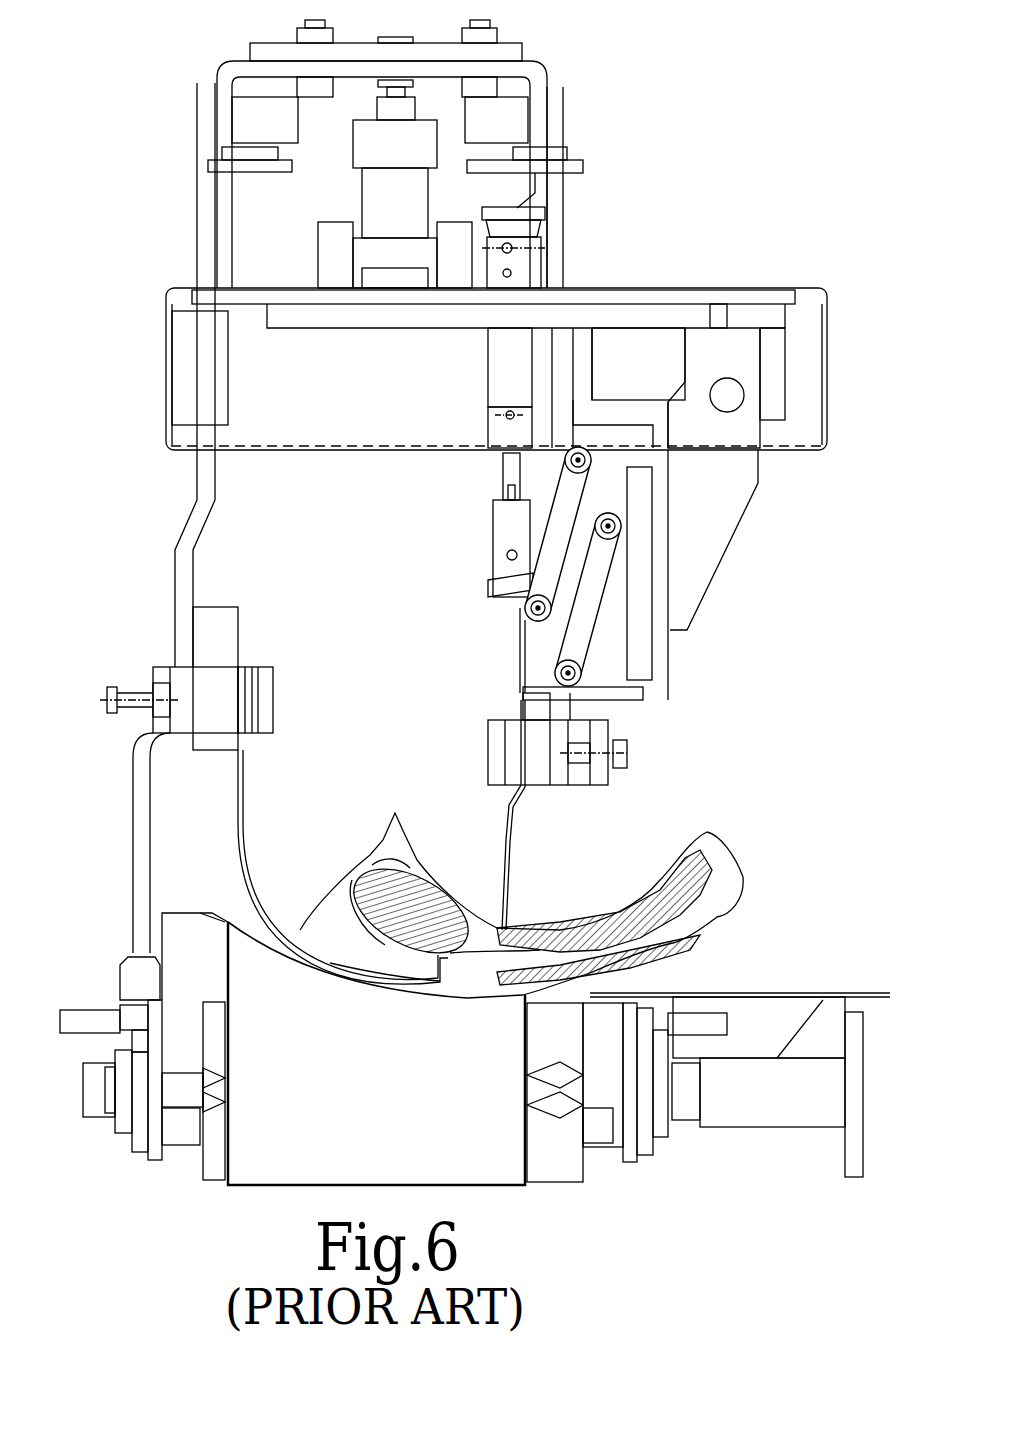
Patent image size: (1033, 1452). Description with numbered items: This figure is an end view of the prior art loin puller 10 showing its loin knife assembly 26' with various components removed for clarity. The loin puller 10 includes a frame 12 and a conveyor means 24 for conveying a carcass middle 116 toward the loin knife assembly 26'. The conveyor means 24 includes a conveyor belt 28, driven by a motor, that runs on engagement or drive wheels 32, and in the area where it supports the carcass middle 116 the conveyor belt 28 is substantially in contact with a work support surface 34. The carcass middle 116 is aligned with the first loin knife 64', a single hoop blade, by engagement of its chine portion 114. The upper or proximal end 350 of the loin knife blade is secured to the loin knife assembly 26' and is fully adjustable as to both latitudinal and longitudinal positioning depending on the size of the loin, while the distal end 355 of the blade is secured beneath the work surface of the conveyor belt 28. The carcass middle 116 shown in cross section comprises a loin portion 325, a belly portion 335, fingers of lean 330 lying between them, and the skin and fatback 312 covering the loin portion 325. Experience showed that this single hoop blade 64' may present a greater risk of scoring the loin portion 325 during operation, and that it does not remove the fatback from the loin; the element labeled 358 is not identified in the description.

The loin puller 10 is at (122, 233).
The frame 12 is at (572, 226).
The conveyor means 24 is at (160, 1190).
The loin knife assembly 26' is at (606, 748).
The conveyor belt 28 is at (240, 990).
The drive wheels 32 is at (565, 1170).
The work support surface 34 is at (140, 920).
The loin knife 64' is at (557, 815).
The chine portion 114 is at (398, 815).
The carcass middle 116 is at (358, 843).
The skin and fatback 312 is at (285, 930).
The loin portion 325 is at (412, 885).
The finger lean 330 is at (405, 963).
The belly portion 335 is at (562, 928).
The proximal end 350 is at (520, 693).
The distal end 355 is at (243, 675).
The clamp plate 358 is at (266, 697).